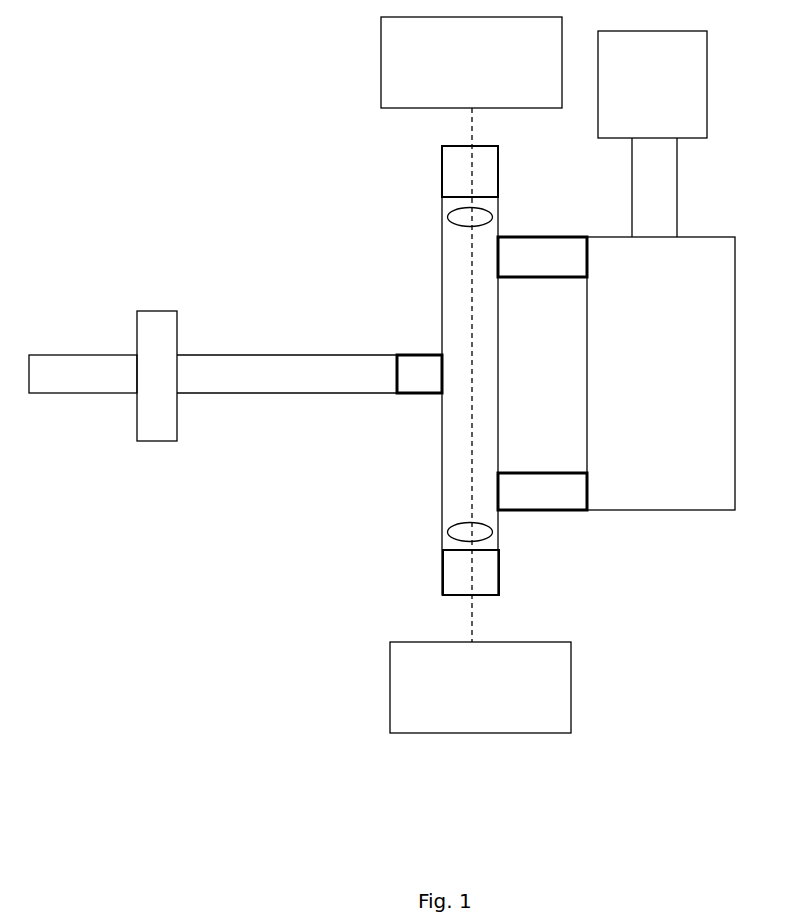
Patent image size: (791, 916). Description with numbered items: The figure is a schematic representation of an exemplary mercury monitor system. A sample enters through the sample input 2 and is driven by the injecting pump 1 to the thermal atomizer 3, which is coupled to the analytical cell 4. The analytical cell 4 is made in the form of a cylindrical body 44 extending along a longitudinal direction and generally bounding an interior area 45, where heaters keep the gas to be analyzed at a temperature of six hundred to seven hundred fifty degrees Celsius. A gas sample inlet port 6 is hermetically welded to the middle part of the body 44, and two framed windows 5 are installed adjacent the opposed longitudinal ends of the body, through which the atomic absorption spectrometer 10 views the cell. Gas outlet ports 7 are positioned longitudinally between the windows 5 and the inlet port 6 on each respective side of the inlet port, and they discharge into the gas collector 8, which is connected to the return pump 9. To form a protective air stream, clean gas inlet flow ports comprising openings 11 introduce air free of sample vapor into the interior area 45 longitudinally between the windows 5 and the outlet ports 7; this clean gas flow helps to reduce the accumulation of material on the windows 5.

The injecting pump 1 is at (83, 374).
The sample input 2 is at (157, 376).
The thermal atomizer 3 is at (287, 374).
The analytical cell 4 is at (470, 375).
The windows 5 is at (470, 370).
The gas sample inlet port 6 is at (419, 374).
The gas outlet ports 7 is at (542, 373).
The gas collector 8 is at (661, 373).
The return pump 9 is at (652, 134).
The atomic absorption spectrometer 10 is at (476, 375).
The clean gas inlet flow ports (openings) 11 is at (432, 213).
The cylindrical body 44 is at (499, 362).
The interior area 45 is at (457, 437).